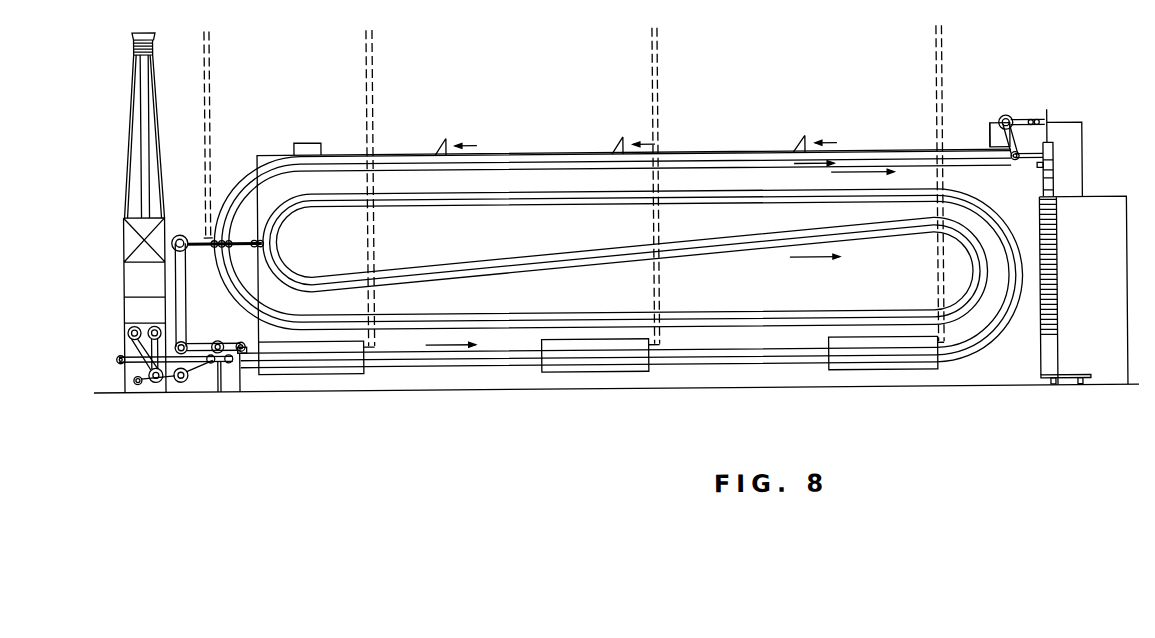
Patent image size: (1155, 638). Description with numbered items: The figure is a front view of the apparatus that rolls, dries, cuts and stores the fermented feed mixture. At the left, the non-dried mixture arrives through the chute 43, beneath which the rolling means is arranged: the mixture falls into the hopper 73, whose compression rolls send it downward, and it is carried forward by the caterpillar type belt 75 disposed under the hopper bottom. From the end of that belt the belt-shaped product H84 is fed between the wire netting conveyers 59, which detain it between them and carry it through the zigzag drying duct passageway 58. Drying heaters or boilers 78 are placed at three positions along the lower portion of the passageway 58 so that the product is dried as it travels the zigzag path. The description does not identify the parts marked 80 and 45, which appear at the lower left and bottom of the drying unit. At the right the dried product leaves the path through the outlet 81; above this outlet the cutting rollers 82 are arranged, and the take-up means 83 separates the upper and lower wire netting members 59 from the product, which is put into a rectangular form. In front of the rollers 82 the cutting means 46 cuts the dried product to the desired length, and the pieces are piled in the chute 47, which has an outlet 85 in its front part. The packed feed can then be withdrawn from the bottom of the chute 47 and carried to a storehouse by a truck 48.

The chute 43 is at (128, 160).
The hopper 73 is at (124, 228).
The caterpillar type belt 75 is at (201, 362).
The wire netting conveyers 59 is at (245, 344).
The support 80 is at (248, 370).
The belt-shaped product H84 is at (249, 375).
The enclosure 45 is at (497, 361).
The drying duct passageway 58 is at (537, 153).
The drying heaters or boilers 78 is at (338, 372).
The take-up means 83 is at (1009, 118).
The outlet 81 is at (1005, 152).
The cutting rollers 82 is at (1017, 166).
The cutting means 46 is at (1050, 146).
The outlet 85 is at (1043, 193).
The chute 47 is at (1058, 265).
The truck 48 is at (1081, 378).